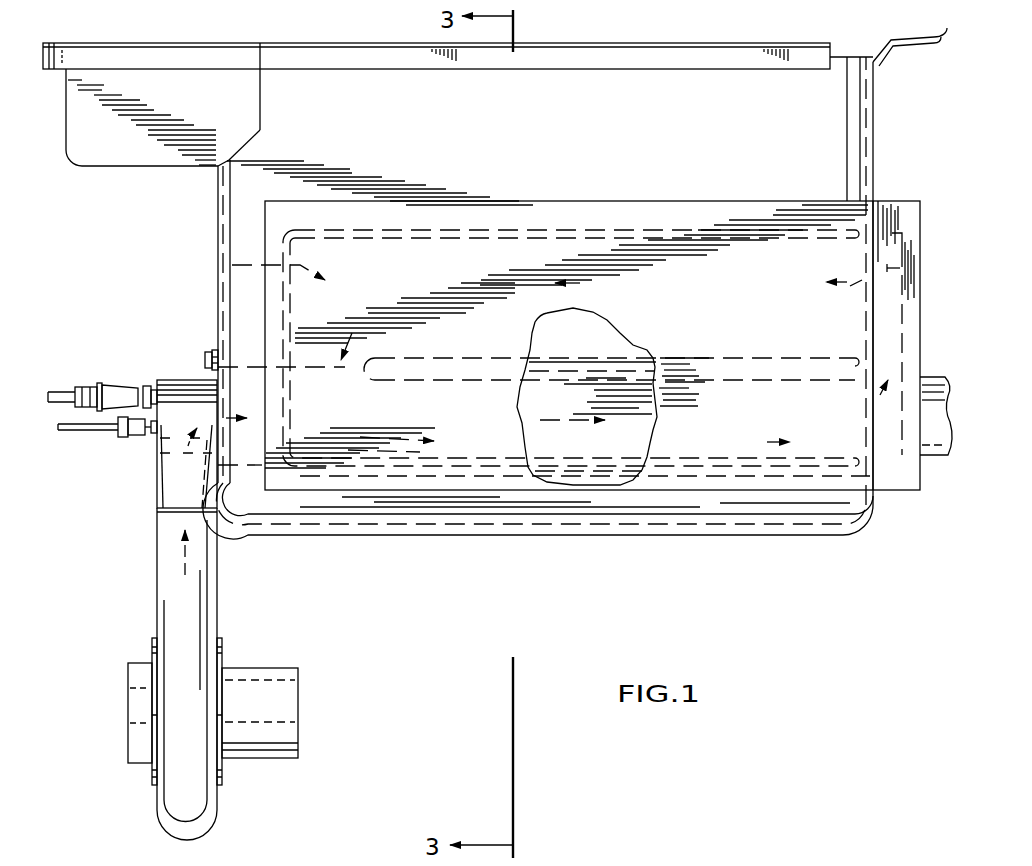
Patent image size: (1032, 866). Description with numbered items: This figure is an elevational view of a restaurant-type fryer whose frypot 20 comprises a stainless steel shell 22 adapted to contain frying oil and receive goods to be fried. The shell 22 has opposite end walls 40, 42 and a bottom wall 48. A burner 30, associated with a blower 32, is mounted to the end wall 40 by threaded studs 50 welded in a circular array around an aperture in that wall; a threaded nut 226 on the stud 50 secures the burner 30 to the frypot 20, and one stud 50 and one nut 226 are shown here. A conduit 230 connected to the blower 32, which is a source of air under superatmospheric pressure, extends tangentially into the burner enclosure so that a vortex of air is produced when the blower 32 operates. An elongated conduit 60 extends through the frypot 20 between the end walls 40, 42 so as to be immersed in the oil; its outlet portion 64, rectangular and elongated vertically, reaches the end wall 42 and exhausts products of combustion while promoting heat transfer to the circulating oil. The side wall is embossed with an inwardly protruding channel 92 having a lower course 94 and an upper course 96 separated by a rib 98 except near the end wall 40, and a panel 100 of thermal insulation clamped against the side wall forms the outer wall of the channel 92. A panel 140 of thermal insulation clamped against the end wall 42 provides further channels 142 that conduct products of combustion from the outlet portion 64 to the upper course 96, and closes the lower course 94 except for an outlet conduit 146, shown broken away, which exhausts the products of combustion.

The frypot 20 is at (333, 543).
The shell 22 is at (746, 534).
The burner 30 is at (142, 480).
The blower 32 is at (154, 808).
The end wall 40 is at (216, 208).
The end wall 42 is at (875, 113).
The bottom wall 48 is at (520, 537).
The stud 50 is at (204, 360).
The conduit 60 is at (561, 360).
The outlet portion 64 is at (606, 385).
The channel 92 is at (216, 265).
The lower course 94 is at (498, 437).
The upper course 96 is at (468, 262).
The rib 98 is at (455, 365).
The panel of thermal insulation 100 is at (728, 220).
The panel of thermal insulation 140 is at (898, 210).
The further channels 142 is at (888, 268).
The conduit 146 is at (931, 376).
The nut 226 is at (209, 351).
The conduit 230 is at (156, 463).